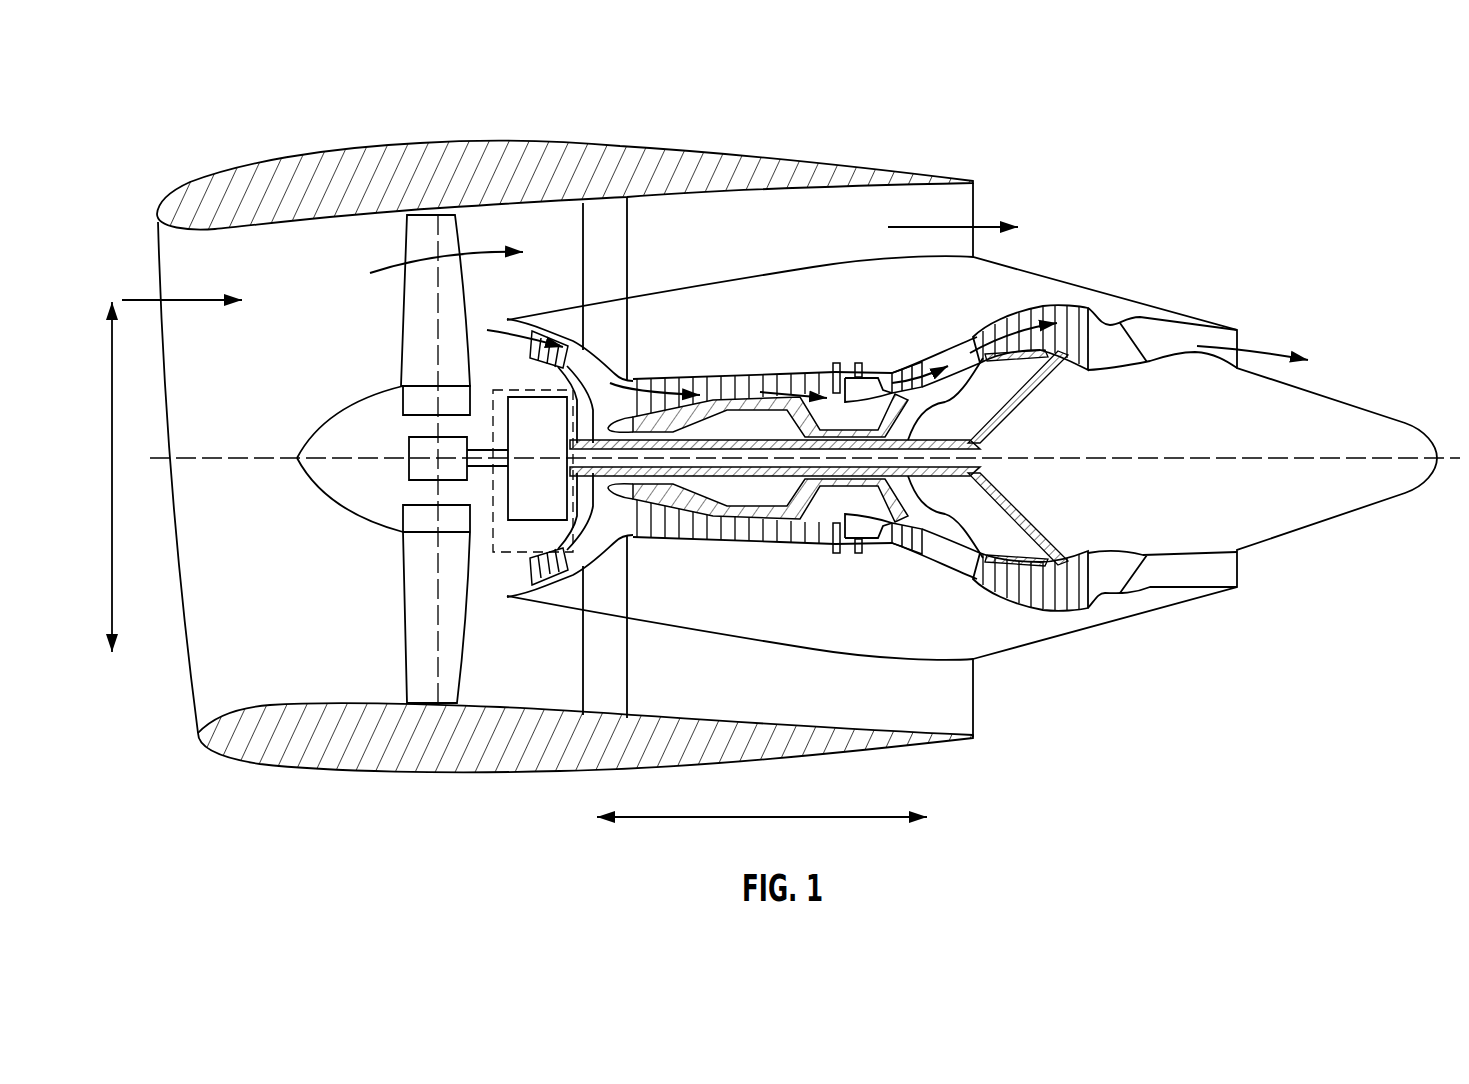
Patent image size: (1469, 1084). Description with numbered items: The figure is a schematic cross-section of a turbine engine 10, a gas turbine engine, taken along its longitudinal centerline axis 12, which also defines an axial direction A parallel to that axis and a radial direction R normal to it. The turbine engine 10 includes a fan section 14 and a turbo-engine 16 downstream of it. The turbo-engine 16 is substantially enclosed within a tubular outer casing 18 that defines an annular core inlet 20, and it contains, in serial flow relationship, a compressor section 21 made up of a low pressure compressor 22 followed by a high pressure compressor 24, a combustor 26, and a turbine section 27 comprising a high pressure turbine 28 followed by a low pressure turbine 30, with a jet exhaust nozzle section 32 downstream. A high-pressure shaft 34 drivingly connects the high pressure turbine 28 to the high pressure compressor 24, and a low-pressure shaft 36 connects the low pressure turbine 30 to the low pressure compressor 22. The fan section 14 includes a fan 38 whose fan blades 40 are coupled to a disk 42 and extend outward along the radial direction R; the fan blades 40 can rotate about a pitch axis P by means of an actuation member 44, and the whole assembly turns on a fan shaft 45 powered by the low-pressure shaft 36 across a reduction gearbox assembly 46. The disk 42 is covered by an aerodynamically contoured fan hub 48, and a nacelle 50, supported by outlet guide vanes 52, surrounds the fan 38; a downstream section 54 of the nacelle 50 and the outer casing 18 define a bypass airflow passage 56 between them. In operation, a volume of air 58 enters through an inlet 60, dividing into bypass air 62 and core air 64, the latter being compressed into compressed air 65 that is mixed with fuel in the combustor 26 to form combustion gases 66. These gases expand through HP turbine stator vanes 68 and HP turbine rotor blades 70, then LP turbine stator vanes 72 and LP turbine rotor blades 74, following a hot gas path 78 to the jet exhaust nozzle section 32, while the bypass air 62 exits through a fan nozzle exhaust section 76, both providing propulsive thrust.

The turbine engine 10 is at (1153, 148).
The longitudinal centerline axis 12 is at (1230, 457).
The fan section 14 is at (375, 230).
The turbo-engine 16 is at (852, 290).
The outer casing 18 is at (807, 649).
The core inlet 20 is at (515, 583).
The compressor section 21 is at (703, 325).
The low pressure compressor 22 is at (548, 583).
The high pressure compressor 24 is at (658, 522).
The combustor 26 is at (860, 527).
The turbine section 27 is at (955, 310).
The high pressure turbine 28 is at (935, 541).
The low pressure turbine 30 is at (1060, 620).
The jet exhaust nozzle section 32 is at (1143, 587).
The high-pressure shaft 34 is at (837, 400).
The low-pressure shaft 36 is at (908, 437).
The fan 38 is at (290, 585).
The fan blades 40 is at (402, 606).
The disk 42 is at (407, 390).
The actuation member 44 is at (410, 463).
The fan shaft 45 is at (420, 403).
The gearbox assembly 46 is at (523, 403).
The fan hub 48 is at (327, 490).
The nacelle 50 is at (415, 775).
The outlet guide vanes 52 is at (630, 266).
The downstream section 54 is at (866, 168).
The bypass airflow passage 56 is at (772, 251).
The volume of air 58 is at (208, 297).
The inlet 60 is at (193, 668).
The bypass air 62 is at (383, 271).
The core air 64 is at (510, 323).
The compressed air 65 is at (683, 390).
The combustion gases 66 is at (900, 374).
The HP turbine stator vanes 68 is at (897, 550).
The HP turbine rotor blades 70 is at (910, 527).
The LP turbine stator vanes 72 is at (980, 578).
The LP turbine rotor blades 74 is at (992, 584).
The fan nozzle exhaust section 76 is at (967, 211).
The hot gas path 78 is at (948, 357).
The pitch axis P is at (440, 237).
The radial direction R is at (114, 553).
The axial direction A is at (827, 817).